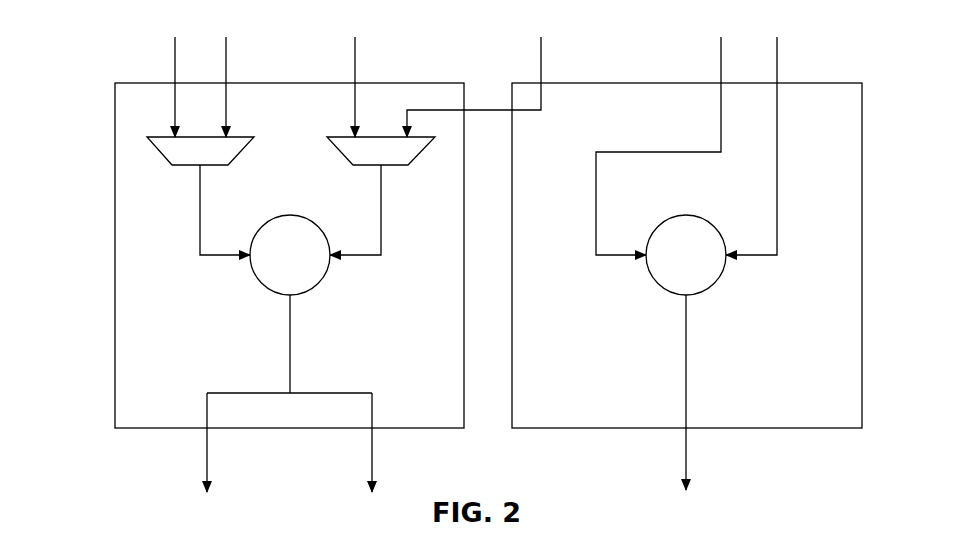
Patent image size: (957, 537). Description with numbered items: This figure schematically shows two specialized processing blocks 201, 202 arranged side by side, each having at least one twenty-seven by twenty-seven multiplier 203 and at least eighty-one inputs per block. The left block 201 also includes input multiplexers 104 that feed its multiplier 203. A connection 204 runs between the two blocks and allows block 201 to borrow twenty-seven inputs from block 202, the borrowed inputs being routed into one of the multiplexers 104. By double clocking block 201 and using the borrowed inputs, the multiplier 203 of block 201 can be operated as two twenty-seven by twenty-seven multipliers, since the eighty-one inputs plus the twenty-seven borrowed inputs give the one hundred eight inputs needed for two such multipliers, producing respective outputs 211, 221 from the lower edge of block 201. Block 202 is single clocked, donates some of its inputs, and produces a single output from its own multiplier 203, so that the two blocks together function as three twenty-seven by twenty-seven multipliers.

The input multiplexers 104 is at (342, 137).
The block 201 is at (400, 428).
The block 202 is at (793, 428).
The 27×27 multiplier 203 is at (318, 273).
The connection 204 is at (482, 110).
The output 211 is at (205, 468).
The output 221 is at (370, 468).